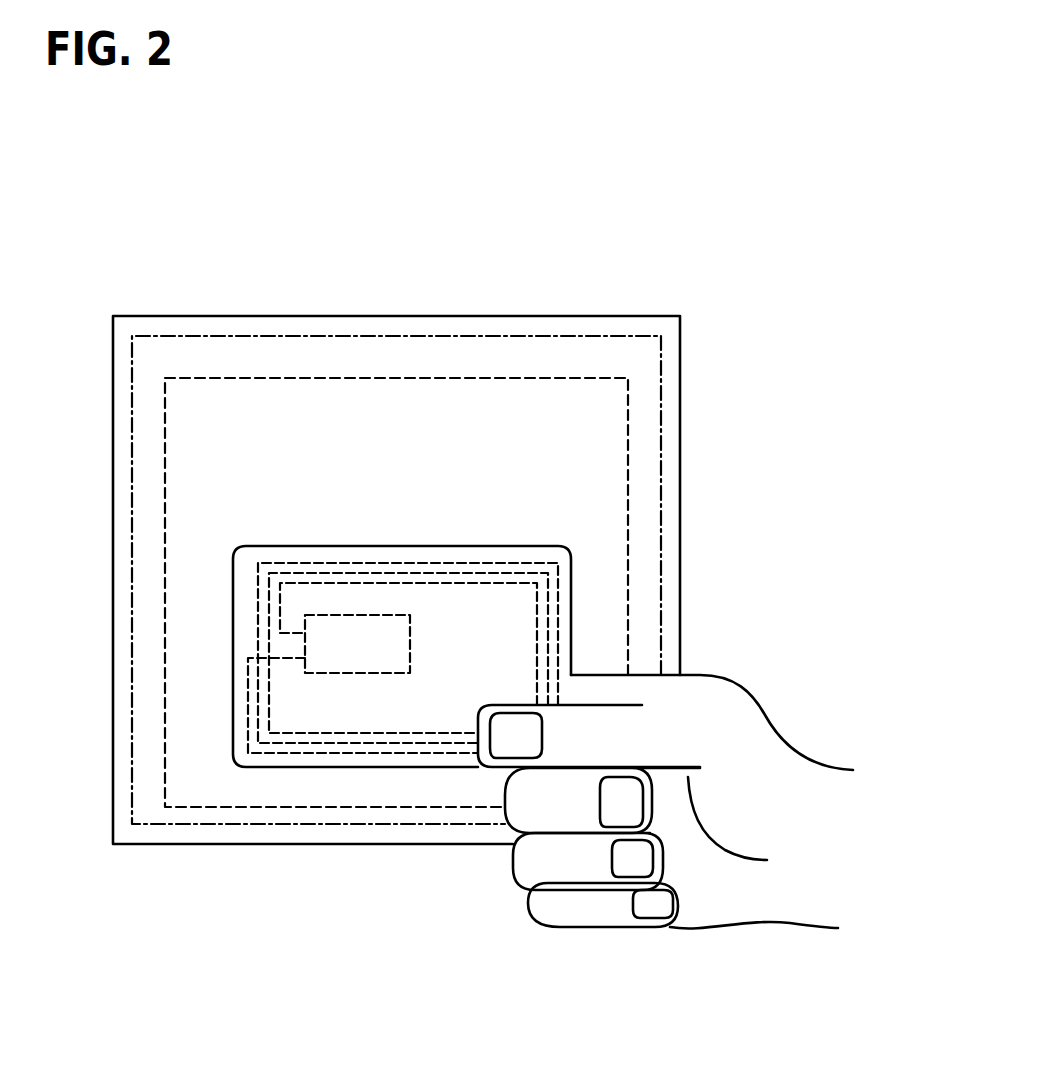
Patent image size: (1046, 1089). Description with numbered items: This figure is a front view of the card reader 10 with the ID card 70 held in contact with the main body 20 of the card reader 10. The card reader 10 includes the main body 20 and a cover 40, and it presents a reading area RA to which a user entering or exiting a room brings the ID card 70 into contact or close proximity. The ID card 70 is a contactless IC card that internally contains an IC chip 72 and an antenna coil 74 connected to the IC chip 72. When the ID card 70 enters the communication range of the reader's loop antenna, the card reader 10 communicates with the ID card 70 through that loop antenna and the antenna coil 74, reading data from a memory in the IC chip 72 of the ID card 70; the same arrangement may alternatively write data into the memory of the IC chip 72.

The card reader 10 is at (685, 254).
The main body 20 is at (342, 336).
The cover 40 is at (428, 316).
The reading area RA is at (230, 378).
The ID card 70 is at (317, 767).
The IC chip 72 is at (410, 642).
The antenna coil 74 is at (420, 753).